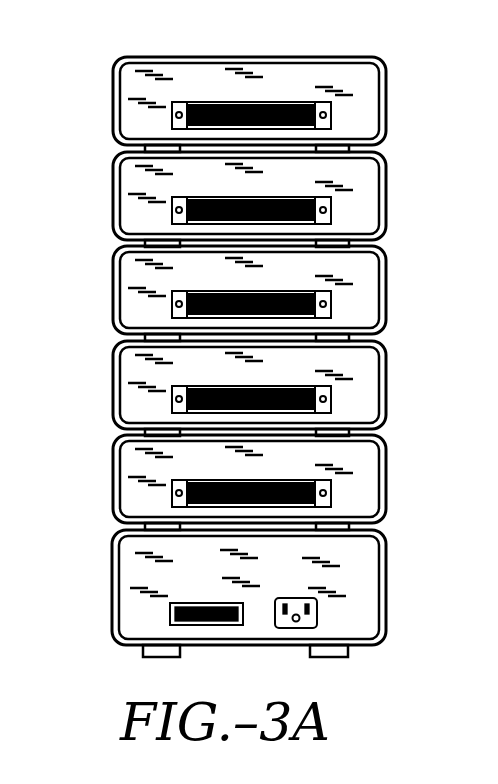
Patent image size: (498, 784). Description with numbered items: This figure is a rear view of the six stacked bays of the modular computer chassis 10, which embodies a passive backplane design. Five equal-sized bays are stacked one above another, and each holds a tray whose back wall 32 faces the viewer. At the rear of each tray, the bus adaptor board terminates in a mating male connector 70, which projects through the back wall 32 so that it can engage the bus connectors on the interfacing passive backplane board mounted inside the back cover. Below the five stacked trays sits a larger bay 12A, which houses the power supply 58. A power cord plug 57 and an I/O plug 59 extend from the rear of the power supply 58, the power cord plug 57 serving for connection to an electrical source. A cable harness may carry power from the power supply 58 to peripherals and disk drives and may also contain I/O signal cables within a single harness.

The modular computer chassis 10 is at (217, 371).
The larger bay 12A is at (219, 594).
The back wall 32 is at (326, 82).
The power cord plug 57 is at (292, 629).
The power supply 58 is at (130, 572).
The I/O plug 59 is at (203, 626).
The mating male connector 70 is at (175, 296).